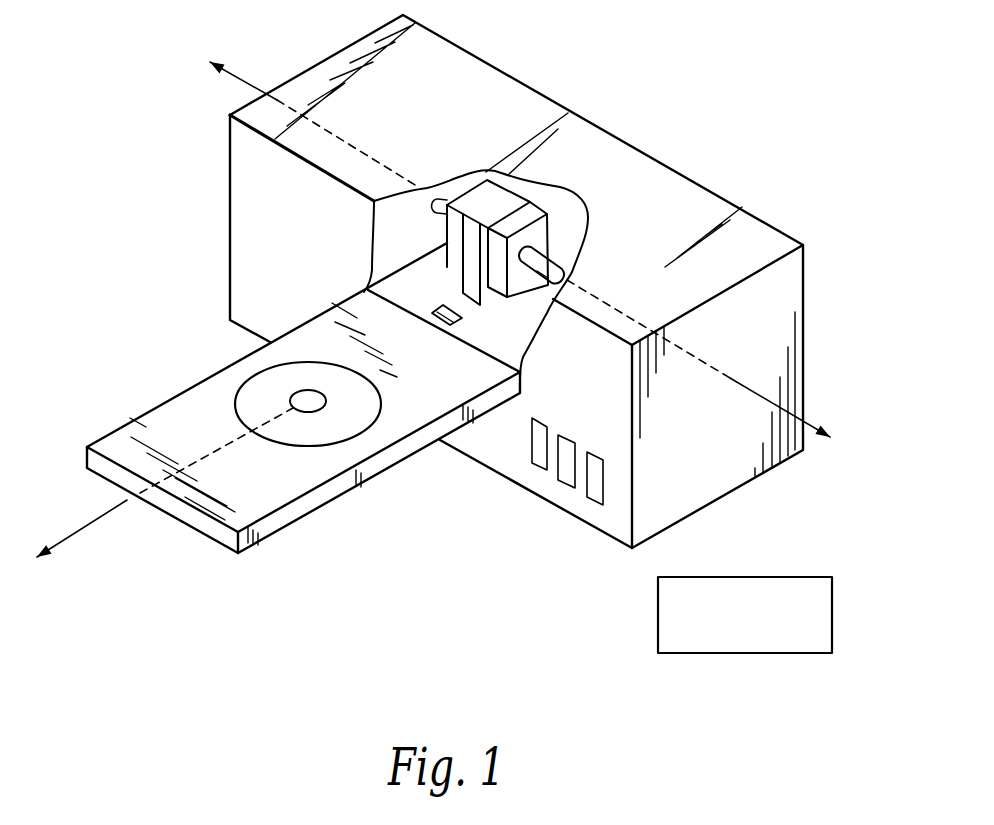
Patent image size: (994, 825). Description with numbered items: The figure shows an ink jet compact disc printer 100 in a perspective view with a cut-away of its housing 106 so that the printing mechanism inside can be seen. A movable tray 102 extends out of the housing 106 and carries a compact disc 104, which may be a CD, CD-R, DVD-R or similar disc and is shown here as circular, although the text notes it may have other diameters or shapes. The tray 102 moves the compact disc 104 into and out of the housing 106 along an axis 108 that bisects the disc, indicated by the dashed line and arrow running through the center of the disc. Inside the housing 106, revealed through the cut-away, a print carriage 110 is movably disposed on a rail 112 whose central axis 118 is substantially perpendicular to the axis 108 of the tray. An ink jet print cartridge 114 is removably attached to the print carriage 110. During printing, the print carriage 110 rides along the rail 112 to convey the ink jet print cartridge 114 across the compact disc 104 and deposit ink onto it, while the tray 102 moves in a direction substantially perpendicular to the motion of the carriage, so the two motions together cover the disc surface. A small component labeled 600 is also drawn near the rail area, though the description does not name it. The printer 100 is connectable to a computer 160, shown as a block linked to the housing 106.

The ink jet compact disc printer 100 is at (765, 84).
The movable tray 102 is at (323, 497).
The compact disc 104 is at (248, 388).
The housing 106 is at (710, 203).
The axis 108 is at (68, 541).
The print carriage 110 is at (533, 207).
The rail 112 is at (436, 192).
The ink jet print cartridge 114 is at (468, 268).
The central axis 118 is at (807, 420).
The computer 160 is at (662, 500).
The sensor 600 is at (432, 312).